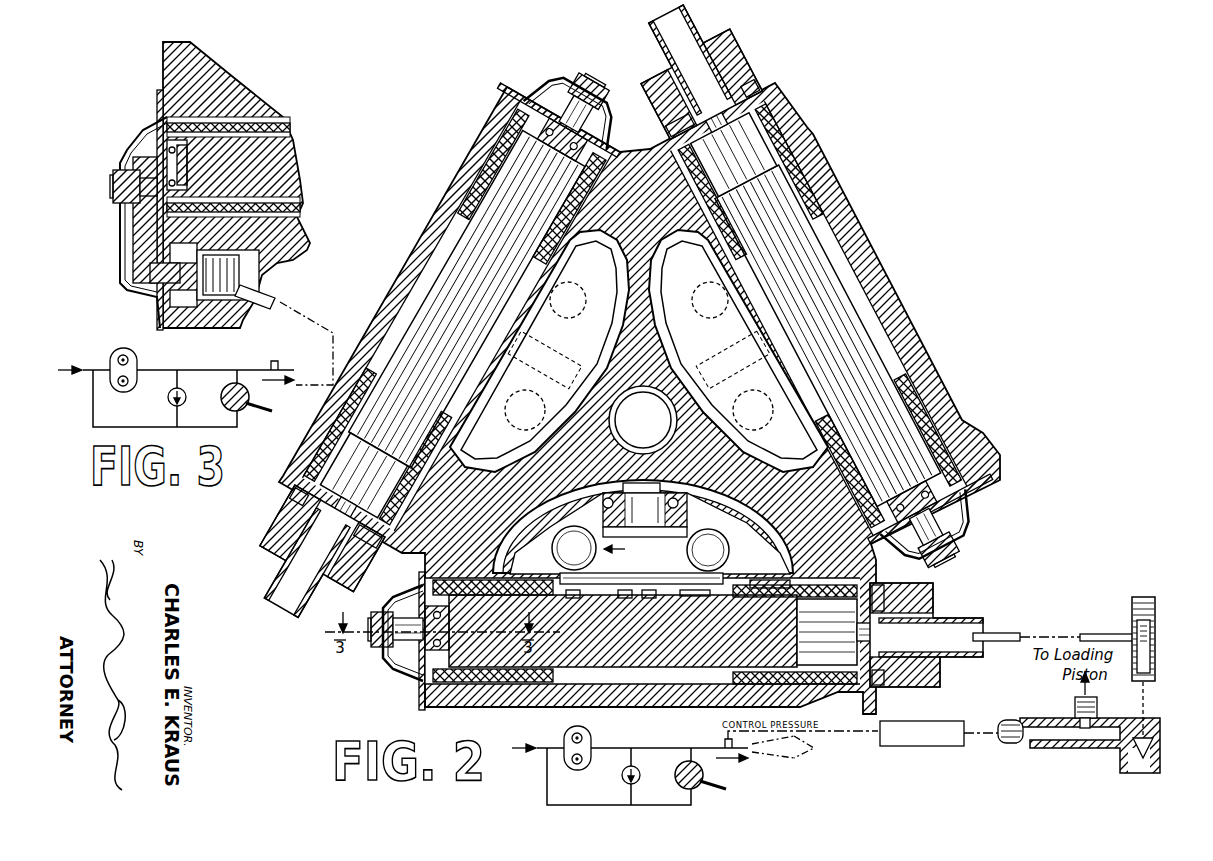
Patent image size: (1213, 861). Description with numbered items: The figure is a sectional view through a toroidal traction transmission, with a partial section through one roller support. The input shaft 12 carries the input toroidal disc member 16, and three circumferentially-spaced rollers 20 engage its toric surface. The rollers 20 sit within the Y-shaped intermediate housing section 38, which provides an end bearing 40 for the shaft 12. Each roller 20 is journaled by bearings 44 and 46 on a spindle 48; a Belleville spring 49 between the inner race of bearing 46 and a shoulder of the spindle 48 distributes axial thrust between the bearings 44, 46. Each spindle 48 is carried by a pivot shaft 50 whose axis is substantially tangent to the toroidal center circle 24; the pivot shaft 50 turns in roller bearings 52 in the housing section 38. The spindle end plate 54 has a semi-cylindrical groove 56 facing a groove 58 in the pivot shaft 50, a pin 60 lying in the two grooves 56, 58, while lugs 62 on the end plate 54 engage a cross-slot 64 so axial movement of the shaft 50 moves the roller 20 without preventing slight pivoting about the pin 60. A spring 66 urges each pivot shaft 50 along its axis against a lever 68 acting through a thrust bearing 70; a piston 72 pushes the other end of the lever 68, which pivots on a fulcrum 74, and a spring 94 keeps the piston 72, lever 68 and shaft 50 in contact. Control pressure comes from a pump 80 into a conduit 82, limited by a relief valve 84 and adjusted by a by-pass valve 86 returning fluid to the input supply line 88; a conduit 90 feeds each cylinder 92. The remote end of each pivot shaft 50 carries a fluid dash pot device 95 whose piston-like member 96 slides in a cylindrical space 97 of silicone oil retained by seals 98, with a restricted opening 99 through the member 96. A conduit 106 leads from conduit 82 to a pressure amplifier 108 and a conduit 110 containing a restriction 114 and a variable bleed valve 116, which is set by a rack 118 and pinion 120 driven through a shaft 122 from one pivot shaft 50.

In FIG. 2, the input shaft 12 is at (634, 428).
In FIG. 2, the input toroidal disc member 16 is at (740, 500).
In FIG. 2, the roller 20 is at (672, 250).
In FIG. 2, the toroidal center circle 24 is at (520, 264).
In FIG. 2, the intermediate housing section 38 is at (628, 208).
In FIG. 2, the end bearing 40 is at (645, 392).
In FIG. 2, the roller bearing 44 is at (699, 558).
In FIG. 2, the roller bearing 46 is at (675, 498).
In FIG. 2, the spindle 48 is at (656, 545).
In FIG. 2, the spring 49 is at (625, 543).
In FIG. 2, the pivot shaft 50 is at (433, 330).
In FIG. 3, the pivot shaft 50 is at (253, 176).
In FIG. 2, the roller bearings 52 is at (482, 167).
In FIG. 3, the roller bearings 52 is at (301, 208).
In FIG. 2, the end plate 54 is at (606, 430).
In FIG. 2, the semi-cylindrical groove 56 is at (641, 568).
In FIG. 2, the groove 58 is at (692, 596).
In FIG. 2, the pin 60 is at (574, 598).
In FIG. 2, the lugs 62 is at (624, 598).
In FIG. 2, the cross-slot 64 is at (650, 598).
In FIG. 2, the spring 66 is at (885, 683).
In FIG. 2, the lever 68 is at (608, 150).
In FIG. 3, the lever 68 is at (150, 136).
In FIG. 2, the thrust bearing 70 is at (545, 192).
In FIG. 3, the thrust bearing 70 is at (184, 160).
In FIG. 3, the piston 72 is at (150, 292).
In FIG. 2, the fulcrum 74 is at (572, 96).
In FIG. 3, the fulcrum 74 is at (110, 190).
In FIG. 2, the pump 80 is at (591, 744).
In FIG. 3, the pump 80 is at (137, 350).
In FIG. 2, the conduit 82 is at (642, 736).
In FIG. 3, the conduit 82 is at (196, 370).
In FIG. 2, the pressure relief valve 84 is at (610, 780).
In FIG. 3, the pressure relief valve 84 is at (167, 399).
In FIG. 2, the by-pass valve 86 is at (247, 410).
In FIG. 3, the by-pass valve 86 is at (247, 410).
In FIG. 2, the input supply line 88 is at (527, 738).
In FIG. 3, the input supply line 88 is at (84, 370).
In FIG. 2, the conduit 90 is at (774, 751).
In FIG. 3, the conduit 90 is at (275, 296).
In FIG. 3, the cylinder 92 is at (228, 300).
In FIG. 3, the spring 94 is at (262, 306).
In FIG. 2, the fluid dash pot device 95 is at (942, 590).
In FIG. 2, the piston-like member 96 is at (926, 601).
In FIG. 2, the cylindrical space 97 is at (932, 662).
In FIG. 2, the seals 98 is at (643, 53).
In FIG. 2, the restricted opening 99 is at (892, 587).
In FIG. 2, the conduit 106 is at (707, 737).
In FIG. 3, the conduit 106 is at (270, 368).
In FIG. 2, the pressure amplifier 108 is at (897, 750).
In FIG. 2, the conduit 110 is at (1097, 708).
In FIG. 2, the restriction 114 is at (1058, 748).
In FIG. 2, the variable bleed valve 116 is at (1130, 752).
In FIG. 2, the rack 118 is at (1150, 600).
In FIG. 2, the pinion 120 is at (1156, 630).
In FIG. 2, the shaft 122 is at (1000, 636).